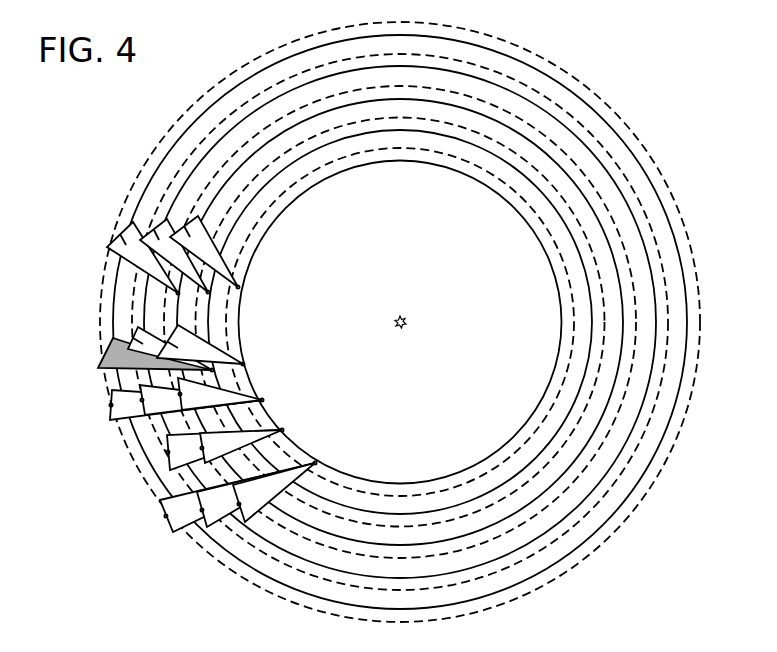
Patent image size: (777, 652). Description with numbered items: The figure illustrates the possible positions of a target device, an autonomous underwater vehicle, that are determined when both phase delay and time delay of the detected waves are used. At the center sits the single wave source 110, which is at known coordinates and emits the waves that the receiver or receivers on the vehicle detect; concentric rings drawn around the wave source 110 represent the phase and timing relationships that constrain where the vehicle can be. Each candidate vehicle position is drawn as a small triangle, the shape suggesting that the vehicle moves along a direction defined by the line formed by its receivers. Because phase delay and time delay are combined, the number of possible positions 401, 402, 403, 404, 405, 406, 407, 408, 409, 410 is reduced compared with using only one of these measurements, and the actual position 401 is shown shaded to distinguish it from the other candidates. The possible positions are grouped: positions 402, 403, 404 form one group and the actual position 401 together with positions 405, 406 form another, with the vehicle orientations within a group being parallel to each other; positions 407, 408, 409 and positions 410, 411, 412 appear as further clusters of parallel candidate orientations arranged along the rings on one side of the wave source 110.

The wave source 110 is at (405, 317).
The actual position 401 is at (106, 358).
The possible position 402 is at (108, 245).
The possible position 403 is at (146, 222).
The possible position 404 is at (163, 223).
The possible position 405 is at (137, 328).
The possible position 406 is at (176, 325).
The possible position 407 is at (110, 405).
The possible position 408 is at (190, 404).
The possible position 409 is at (200, 434).
The possible position 410 is at (168, 514).
The sensor 411 is at (204, 512).
The sensor 412 is at (241, 506).